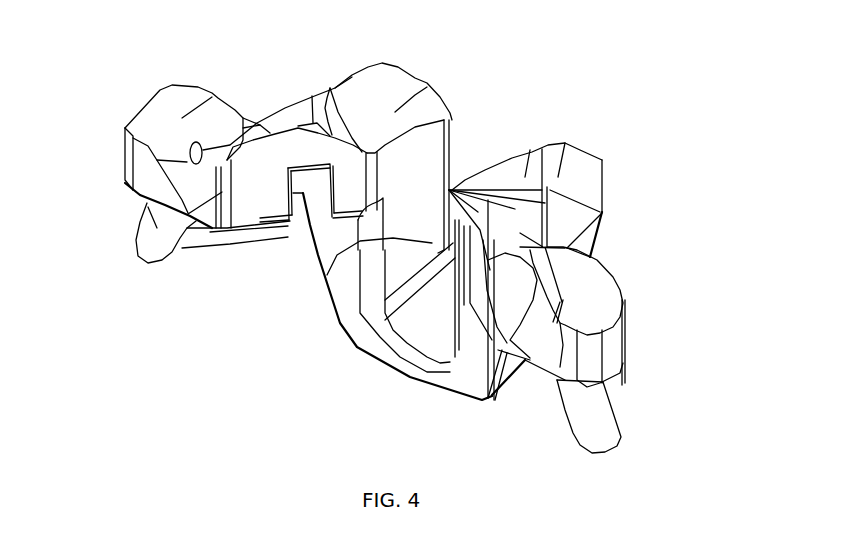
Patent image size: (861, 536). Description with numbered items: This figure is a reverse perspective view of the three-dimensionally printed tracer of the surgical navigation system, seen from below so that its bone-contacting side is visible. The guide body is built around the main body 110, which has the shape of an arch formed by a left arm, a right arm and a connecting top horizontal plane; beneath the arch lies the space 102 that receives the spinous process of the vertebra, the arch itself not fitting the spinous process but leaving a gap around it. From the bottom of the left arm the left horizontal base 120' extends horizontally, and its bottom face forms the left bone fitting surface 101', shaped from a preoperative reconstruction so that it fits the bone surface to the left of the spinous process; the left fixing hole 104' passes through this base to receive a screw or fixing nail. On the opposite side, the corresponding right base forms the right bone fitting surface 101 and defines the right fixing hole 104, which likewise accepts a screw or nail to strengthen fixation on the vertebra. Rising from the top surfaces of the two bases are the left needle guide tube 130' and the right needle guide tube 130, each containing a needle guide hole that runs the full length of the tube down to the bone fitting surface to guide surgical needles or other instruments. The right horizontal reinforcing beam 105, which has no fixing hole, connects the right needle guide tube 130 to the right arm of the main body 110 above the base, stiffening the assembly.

The right bone fitting surface 101 is at (394, 115).
The left bone fitting surface 101' is at (615, 257).
The space under the arch 102 is at (327, 275).
The right fixing hole 104 is at (388, 125).
The left fixing hole 104' is at (556, 157).
The right horizontal reinforcing beam 105 is at (210, 237).
The main body 110 is at (490, 370).
The left horizontal base 120' is at (646, 343).
The right needle guide tube 130 is at (118, 226).
The left needle guide tube 130' is at (650, 403).